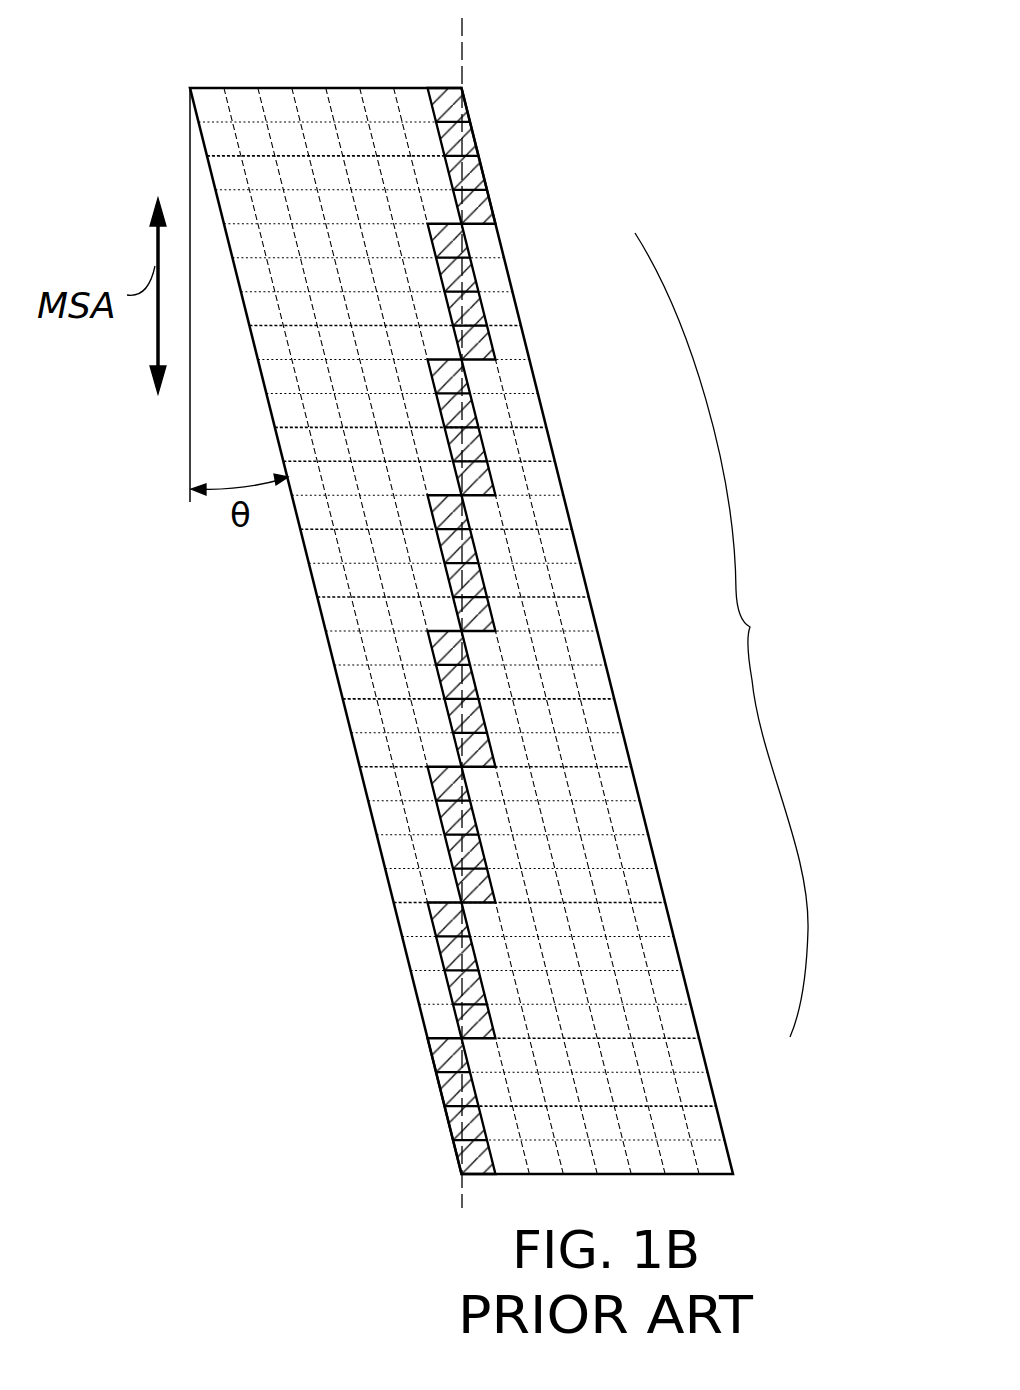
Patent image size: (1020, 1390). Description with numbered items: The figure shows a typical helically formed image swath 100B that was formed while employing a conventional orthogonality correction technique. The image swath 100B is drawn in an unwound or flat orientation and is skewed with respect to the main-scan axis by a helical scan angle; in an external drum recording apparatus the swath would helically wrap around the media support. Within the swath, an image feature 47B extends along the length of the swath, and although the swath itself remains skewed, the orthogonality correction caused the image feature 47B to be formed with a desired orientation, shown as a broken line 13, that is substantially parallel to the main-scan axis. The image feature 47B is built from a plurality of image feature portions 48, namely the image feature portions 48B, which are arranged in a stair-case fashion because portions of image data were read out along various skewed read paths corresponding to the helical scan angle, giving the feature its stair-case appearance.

The broken line 13 is at (460, 31).
The image feature 47B is at (492, 128).
The image feature portions 48B is at (473, 307).
The image feature portions 48 is at (780, 600).
The image swath 100B is at (407, 748).